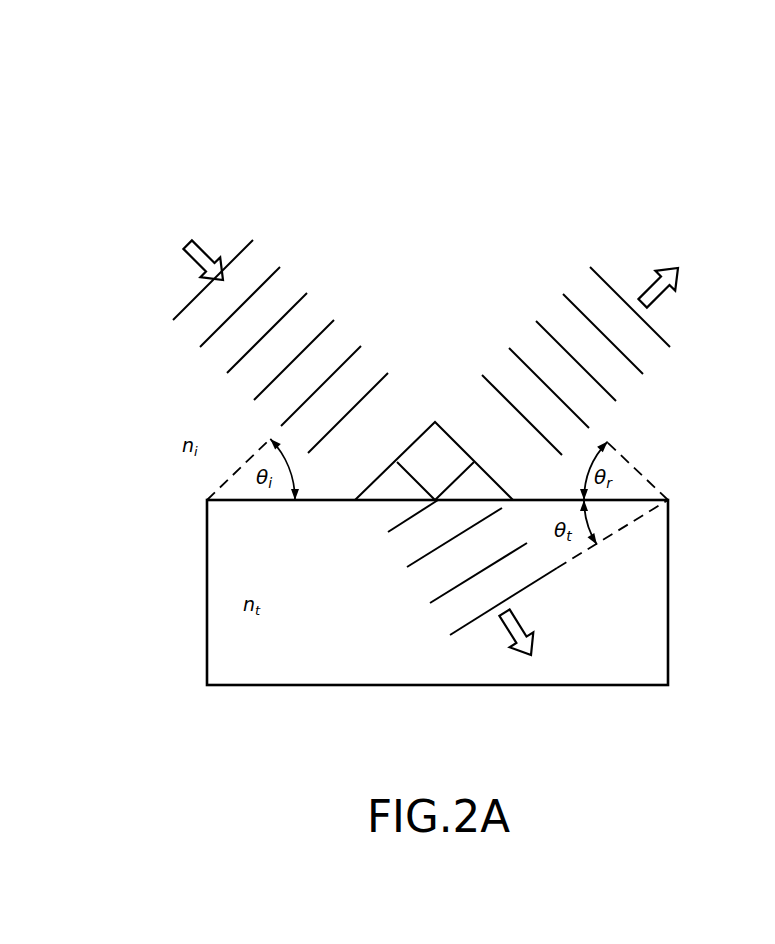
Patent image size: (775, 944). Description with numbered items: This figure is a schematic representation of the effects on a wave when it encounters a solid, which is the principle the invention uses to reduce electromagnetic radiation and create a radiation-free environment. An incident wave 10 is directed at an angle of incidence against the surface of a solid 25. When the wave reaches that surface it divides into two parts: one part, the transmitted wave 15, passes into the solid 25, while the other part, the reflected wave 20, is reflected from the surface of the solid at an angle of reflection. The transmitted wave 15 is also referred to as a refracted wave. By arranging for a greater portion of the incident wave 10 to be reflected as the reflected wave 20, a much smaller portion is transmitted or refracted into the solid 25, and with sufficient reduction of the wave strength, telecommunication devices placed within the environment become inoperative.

The incident wave 10 is at (306, 236).
The reflected wave 20 is at (590, 242).
The transmitted wave 15 is at (600, 640).
The solid 25 is at (206, 612).